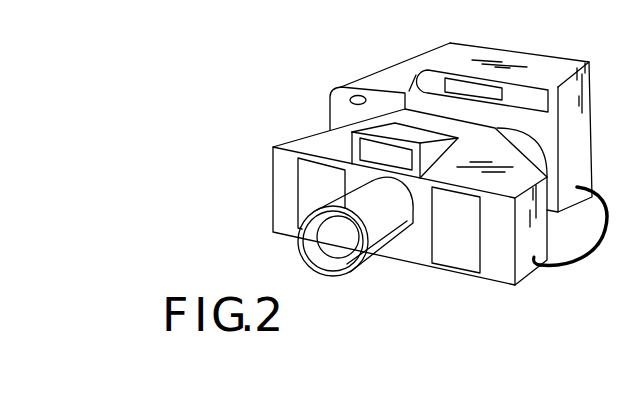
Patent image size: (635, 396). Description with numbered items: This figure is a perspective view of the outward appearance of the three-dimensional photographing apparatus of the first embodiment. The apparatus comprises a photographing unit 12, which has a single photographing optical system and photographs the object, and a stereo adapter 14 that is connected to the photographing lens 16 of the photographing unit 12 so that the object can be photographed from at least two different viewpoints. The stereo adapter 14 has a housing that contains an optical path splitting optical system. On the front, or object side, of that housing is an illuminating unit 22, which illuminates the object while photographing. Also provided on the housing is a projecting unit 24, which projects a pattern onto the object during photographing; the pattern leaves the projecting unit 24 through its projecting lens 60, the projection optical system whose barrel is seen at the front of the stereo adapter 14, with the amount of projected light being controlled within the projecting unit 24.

The photographing unit 12 is at (367, 77).
The stereo adapter 14 is at (289, 146).
The photographing lens 16 is at (533, 153).
The illuminating unit 22 is at (348, 143).
The projecting unit 24 is at (386, 252).
The projecting lens 60 is at (335, 238).